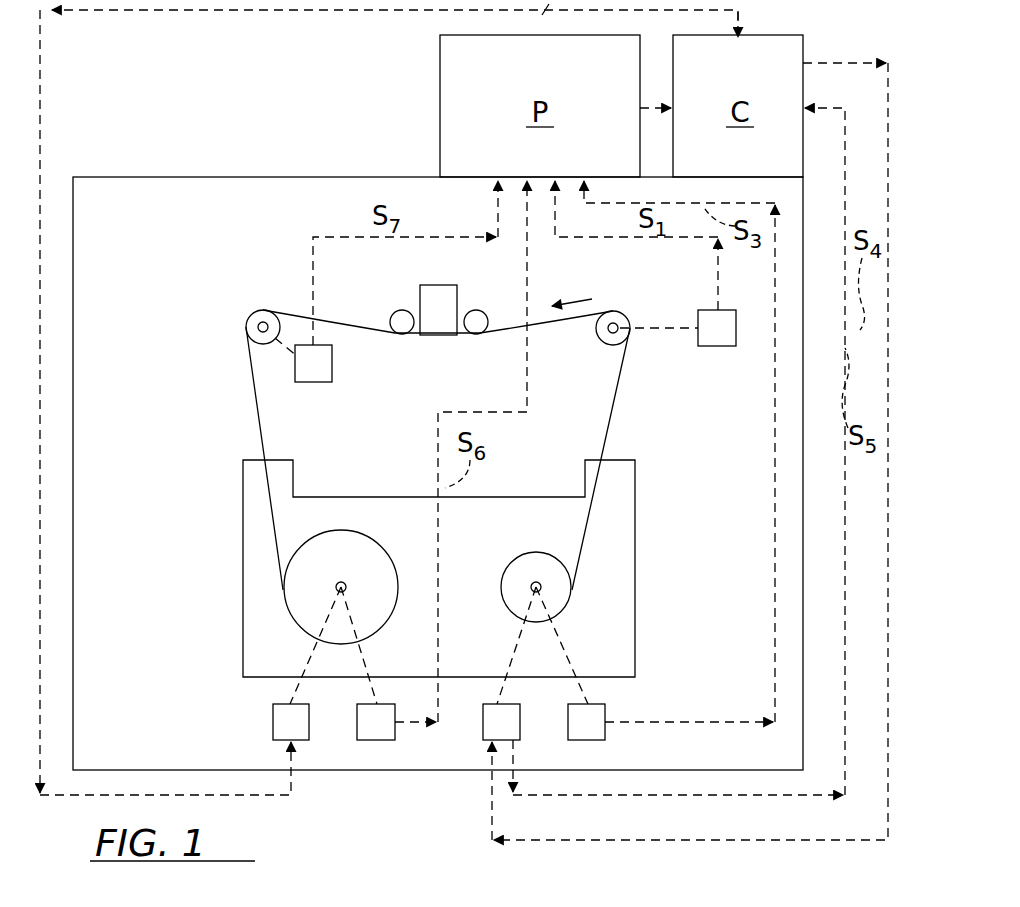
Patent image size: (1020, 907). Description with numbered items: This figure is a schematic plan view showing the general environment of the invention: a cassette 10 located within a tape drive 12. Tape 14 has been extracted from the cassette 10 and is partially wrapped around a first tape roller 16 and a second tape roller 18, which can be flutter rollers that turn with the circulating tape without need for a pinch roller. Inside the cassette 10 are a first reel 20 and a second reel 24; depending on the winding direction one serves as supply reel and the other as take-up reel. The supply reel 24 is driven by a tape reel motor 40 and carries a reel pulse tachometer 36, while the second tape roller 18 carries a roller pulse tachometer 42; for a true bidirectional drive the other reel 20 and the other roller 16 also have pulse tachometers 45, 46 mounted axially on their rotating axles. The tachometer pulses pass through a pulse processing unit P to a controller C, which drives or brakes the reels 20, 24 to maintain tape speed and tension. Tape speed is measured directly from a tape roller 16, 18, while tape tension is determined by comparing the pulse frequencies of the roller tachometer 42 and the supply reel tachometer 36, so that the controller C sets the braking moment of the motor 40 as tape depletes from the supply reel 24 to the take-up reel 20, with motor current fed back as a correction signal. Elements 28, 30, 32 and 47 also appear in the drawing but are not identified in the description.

The cassette 10 is at (241, 535).
The tape drive 12 is at (325, 774).
The tape 14 is at (572, 318).
The first tape roller 16 is at (265, 308).
The second tape roller 18 is at (603, 338).
The first reel 20 is at (343, 575).
The second reel 24 is at (530, 583).
The read/write head 28 is at (432, 300).
The head roller 30 is at (395, 322).
The head roller 32 is at (478, 325).
The reel pulse tachometer 36 is at (605, 712).
The tape reel motor 40 is at (520, 722).
The roller pulse tachometer 42 is at (712, 346).
The pulse tachometer 45 is at (370, 742).
The pulse tachometer 46 is at (332, 355).
The reel motor 47 is at (273, 725).